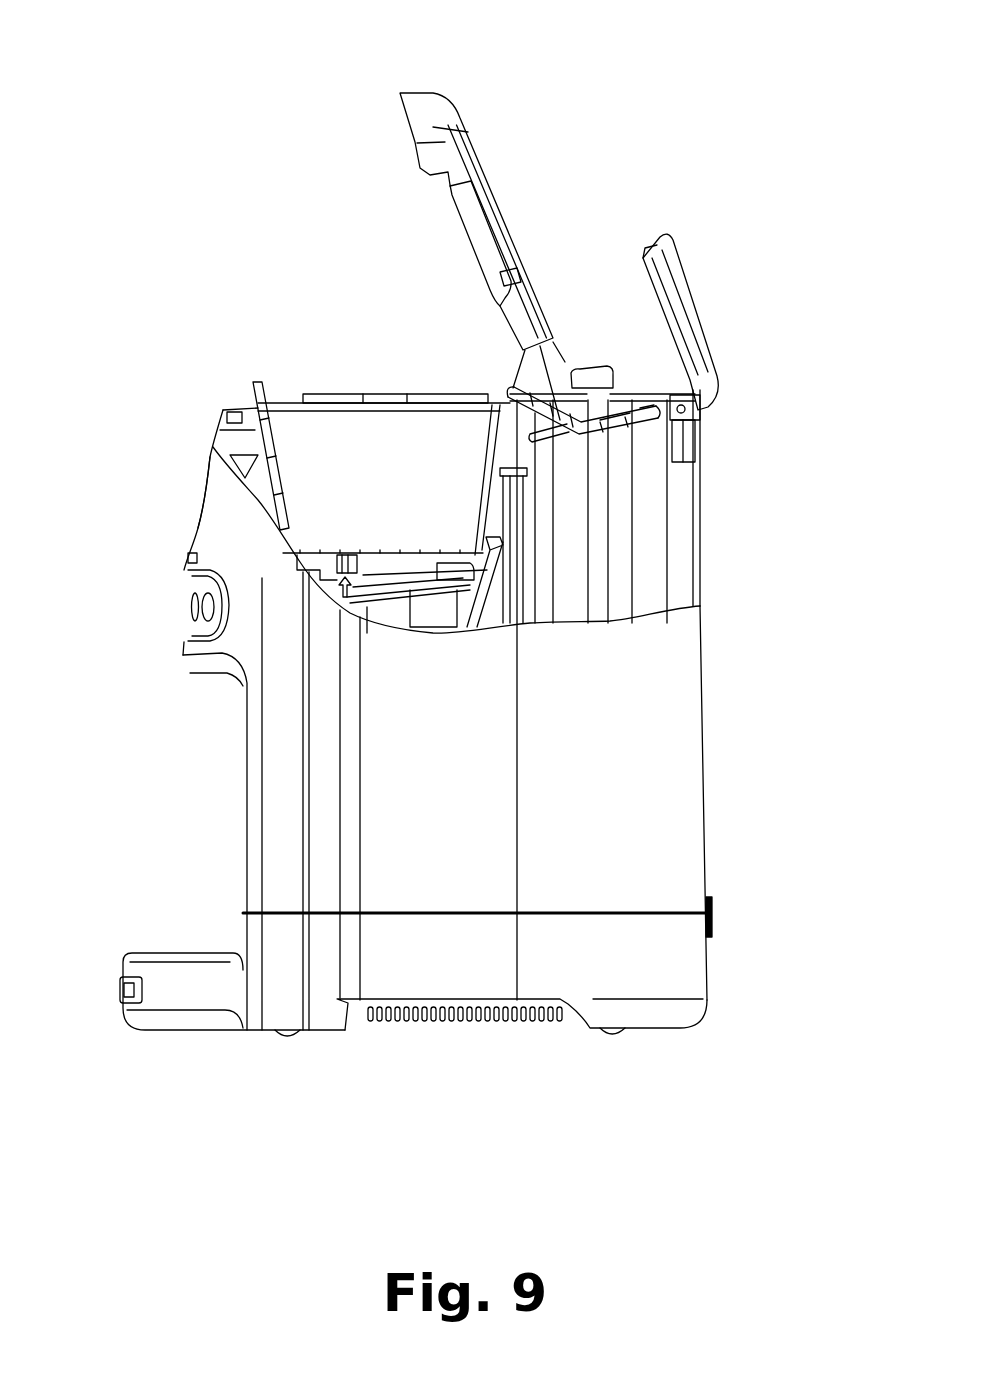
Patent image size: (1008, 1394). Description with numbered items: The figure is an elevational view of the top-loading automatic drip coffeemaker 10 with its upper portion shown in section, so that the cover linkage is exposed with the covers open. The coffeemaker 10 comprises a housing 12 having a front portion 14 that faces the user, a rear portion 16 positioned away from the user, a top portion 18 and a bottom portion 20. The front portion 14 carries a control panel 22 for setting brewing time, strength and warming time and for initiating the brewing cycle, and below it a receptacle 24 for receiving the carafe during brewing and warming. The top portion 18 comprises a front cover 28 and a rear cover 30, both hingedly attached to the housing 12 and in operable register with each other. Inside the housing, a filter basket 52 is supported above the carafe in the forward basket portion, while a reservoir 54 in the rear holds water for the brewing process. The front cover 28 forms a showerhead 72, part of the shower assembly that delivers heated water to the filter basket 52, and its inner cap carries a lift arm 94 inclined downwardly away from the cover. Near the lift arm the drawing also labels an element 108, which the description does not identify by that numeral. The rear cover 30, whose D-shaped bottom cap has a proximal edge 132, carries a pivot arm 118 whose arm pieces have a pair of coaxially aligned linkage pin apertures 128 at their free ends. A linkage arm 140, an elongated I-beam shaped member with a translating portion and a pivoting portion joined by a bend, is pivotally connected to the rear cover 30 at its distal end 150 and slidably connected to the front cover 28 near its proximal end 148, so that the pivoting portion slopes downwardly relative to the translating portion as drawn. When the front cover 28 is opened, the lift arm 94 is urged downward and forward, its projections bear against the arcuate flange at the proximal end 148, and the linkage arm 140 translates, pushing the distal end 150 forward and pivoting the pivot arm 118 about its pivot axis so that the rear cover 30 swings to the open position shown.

The top-loading automatic drip coffeemaker 10 is at (93, 284).
The housing 12 is at (558, 783).
The front portion 14 is at (192, 512).
The rear portion 16 is at (707, 668).
The top portion 18 is at (580, 220).
The bottom portion 20 is at (381, 1042).
The control panel 22 is at (176, 617).
The receptacle 24 is at (185, 866).
The front cover 28 is at (415, 92).
The rear cover 30 is at (690, 282).
The filter basket 52 is at (283, 490).
The reservoir 54 is at (652, 583).
The showerhead 72 is at (460, 227).
The lift arm 94 is at (506, 365).
The post 108 is at (558, 354).
The pivot arm 118 is at (697, 420).
The linkage pin aperture 128 is at (683, 404).
The proximal edge 132 is at (655, 233).
The linkage arm 140 is at (638, 438).
The proximal end 148 is at (507, 393).
The distal end 150 is at (653, 415).